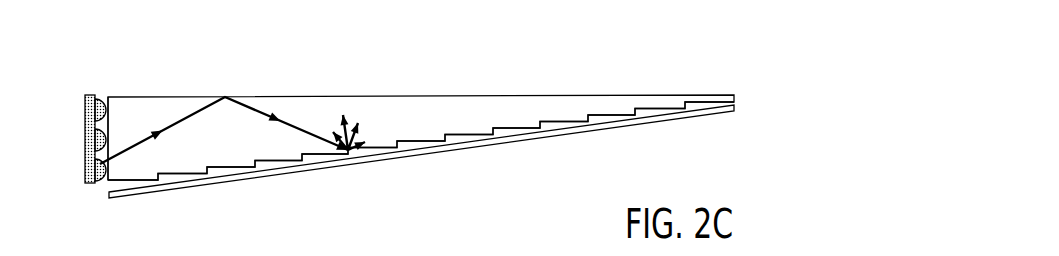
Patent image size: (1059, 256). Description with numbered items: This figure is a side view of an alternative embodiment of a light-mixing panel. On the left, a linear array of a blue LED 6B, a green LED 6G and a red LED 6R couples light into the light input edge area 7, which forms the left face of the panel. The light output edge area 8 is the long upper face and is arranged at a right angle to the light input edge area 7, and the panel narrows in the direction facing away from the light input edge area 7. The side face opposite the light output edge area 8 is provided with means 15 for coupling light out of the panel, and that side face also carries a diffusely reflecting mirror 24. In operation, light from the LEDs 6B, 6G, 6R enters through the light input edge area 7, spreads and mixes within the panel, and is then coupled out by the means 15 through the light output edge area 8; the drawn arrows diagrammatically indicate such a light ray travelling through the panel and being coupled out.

The blue LED 6B is at (85, 108).
The green LED 6G is at (85, 138).
The red LED 6R is at (85, 167).
The light input edge area 7 is at (110, 112).
The light output edge area 8 is at (440, 96).
The means for coupling light out 15 is at (398, 146).
The diffusely reflecting mirror 24 is at (292, 168).